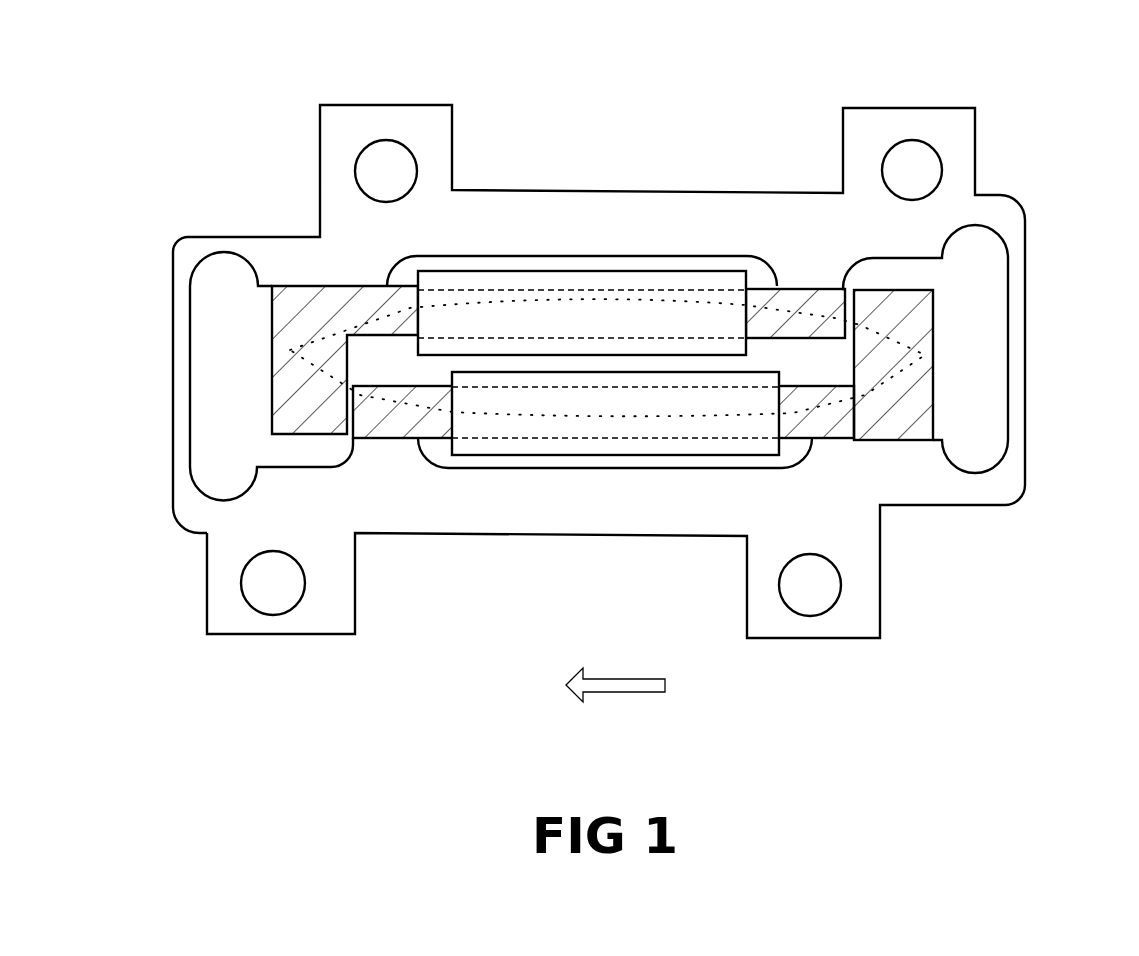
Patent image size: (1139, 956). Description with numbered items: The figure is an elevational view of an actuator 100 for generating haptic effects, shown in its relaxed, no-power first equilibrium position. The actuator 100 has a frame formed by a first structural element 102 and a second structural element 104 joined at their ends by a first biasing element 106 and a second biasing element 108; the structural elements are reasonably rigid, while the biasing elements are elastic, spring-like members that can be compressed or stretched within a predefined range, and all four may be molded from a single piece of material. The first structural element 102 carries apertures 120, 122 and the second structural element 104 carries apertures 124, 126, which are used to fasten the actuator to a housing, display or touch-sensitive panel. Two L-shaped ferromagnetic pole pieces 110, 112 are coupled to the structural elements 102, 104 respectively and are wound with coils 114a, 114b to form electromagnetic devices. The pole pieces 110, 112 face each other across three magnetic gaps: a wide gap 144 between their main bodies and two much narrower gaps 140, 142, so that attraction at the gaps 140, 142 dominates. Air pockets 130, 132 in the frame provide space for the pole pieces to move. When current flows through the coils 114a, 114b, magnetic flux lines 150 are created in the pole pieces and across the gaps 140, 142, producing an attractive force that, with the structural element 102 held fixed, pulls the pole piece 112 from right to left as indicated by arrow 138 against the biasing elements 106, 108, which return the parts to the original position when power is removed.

The actuator 100 is at (176, 133).
The first structural element 102 is at (617, 218).
The second structural element 104 is at (616, 503).
The first biasing element 106 is at (172, 415).
The second biasing element 108 is at (1033, 373).
The first pole piece 110 is at (831, 286).
The second pole piece 112 is at (852, 419).
The first coil 114a is at (671, 312).
The second coil 114b is at (539, 454).
The aperture 120 is at (367, 169).
The aperture 122 is at (912, 144).
The aperture 124 is at (264, 607).
The aperture 126 is at (820, 604).
The air pocket 130 is at (213, 299).
The air pocket 132 is at (969, 251).
The arrow 138 is at (594, 701).
The magnetic gap 140 is at (342, 415).
The magnetic gap 142 is at (858, 305).
The magnetic gap 144 is at (519, 351).
The magnetic flux lines 150 is at (910, 393).